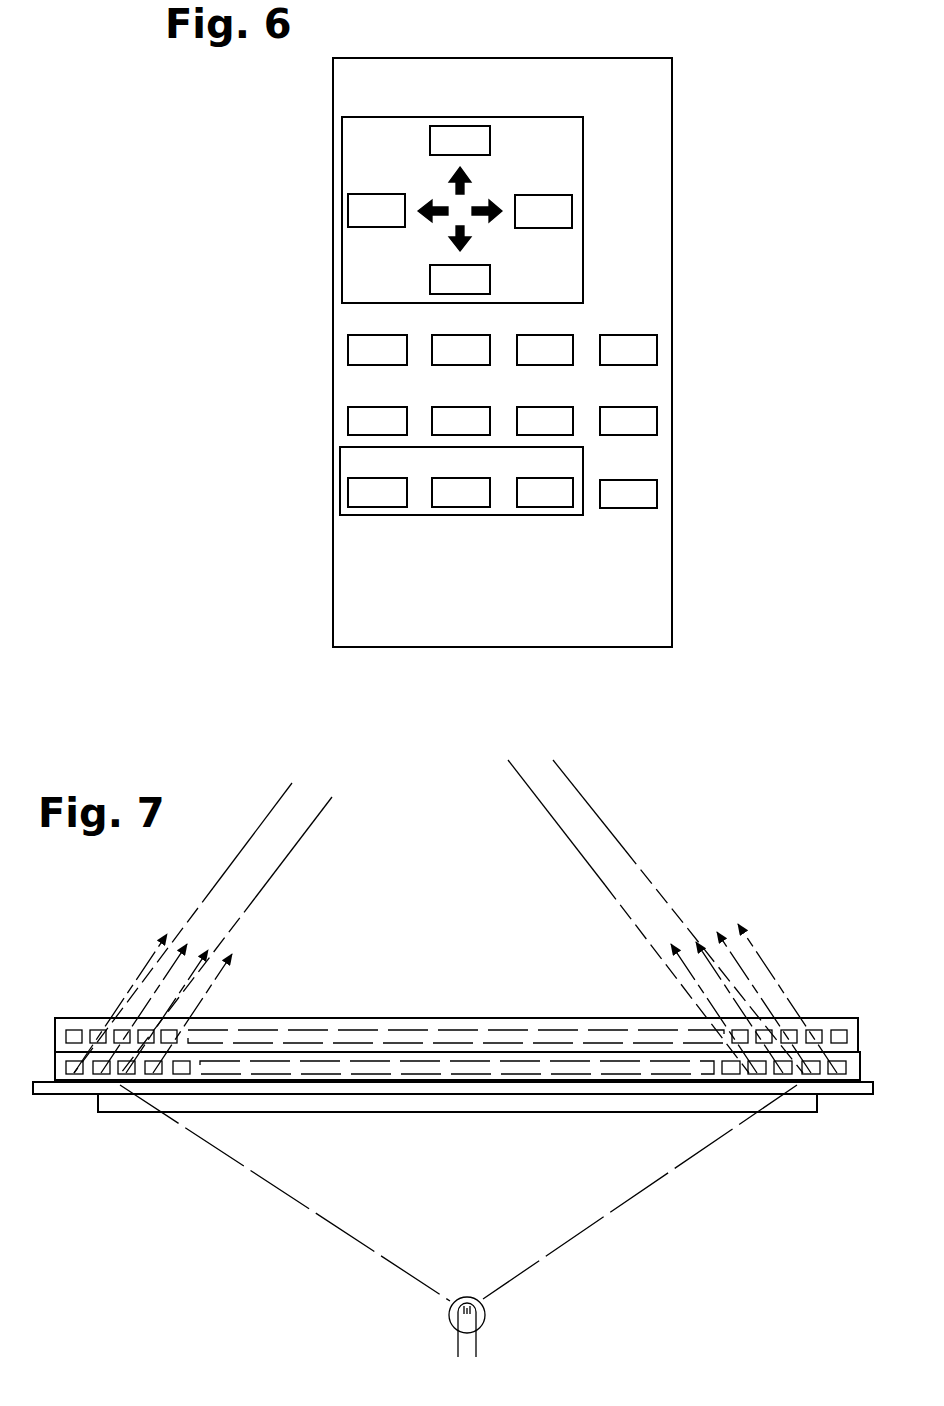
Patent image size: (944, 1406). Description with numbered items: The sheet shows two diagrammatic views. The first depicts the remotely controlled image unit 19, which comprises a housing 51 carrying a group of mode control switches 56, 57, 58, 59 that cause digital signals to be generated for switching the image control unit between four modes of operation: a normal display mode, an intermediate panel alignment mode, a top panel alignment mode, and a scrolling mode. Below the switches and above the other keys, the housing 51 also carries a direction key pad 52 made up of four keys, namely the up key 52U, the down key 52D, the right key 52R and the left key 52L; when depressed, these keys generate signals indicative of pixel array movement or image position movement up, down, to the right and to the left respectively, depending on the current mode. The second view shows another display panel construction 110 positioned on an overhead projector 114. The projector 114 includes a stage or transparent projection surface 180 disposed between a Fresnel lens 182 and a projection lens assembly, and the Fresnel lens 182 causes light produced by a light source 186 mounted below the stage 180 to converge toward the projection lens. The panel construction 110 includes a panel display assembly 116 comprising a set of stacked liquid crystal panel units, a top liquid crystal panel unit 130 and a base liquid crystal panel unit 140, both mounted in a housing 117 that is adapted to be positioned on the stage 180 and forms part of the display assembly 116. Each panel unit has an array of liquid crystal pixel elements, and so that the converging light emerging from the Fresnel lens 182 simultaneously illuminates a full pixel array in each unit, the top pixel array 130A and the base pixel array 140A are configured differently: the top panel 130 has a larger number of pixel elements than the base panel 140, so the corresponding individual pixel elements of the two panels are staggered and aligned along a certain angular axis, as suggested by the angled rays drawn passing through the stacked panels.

In FIG. 6, the remotely controlled image unit 19 is at (518, 332).
In FIG. 6, the housing 51 is at (672, 78).
In FIG. 6, the direction key pad 52 is at (357, 263).
In FIG. 6, the up key 52U is at (462, 134).
In FIG. 6, the left key 52L is at (370, 203).
In FIG. 6, the right key 52R is at (560, 212).
In FIG. 6, the down key 52D is at (480, 278).
In FIG. 6, the mode control switch 56 is at (352, 350).
In FIG. 6, the mode control switch 57 is at (571, 340).
In FIG. 6, the mode control switch 58 is at (432, 358).
In FIG. 6, the mode control switch 59 is at (647, 348).
In FIG. 7, the display panel construction 110 is at (454, 1058).
In FIG. 7, the overhead projector 114 is at (43, 1105).
In FIG. 7, the panel display assembly 116 is at (92, 974).
In FIG. 7, the housing 117 is at (453, 1021).
In FIG. 7, the top liquid crystal panel unit 130 is at (858, 1025).
In FIG. 7, the top pixel array 130A is at (823, 1012).
In FIG. 7, the base liquid crystal panel unit 140 is at (863, 1062).
In FIG. 7, the base pixel array 140A is at (829, 1095).
In FIG. 7, the stage 180 is at (850, 1098).
In FIG. 7, the Fresnel lens 182 is at (128, 1112).
In FIG. 7, the light source 186 is at (486, 1313).